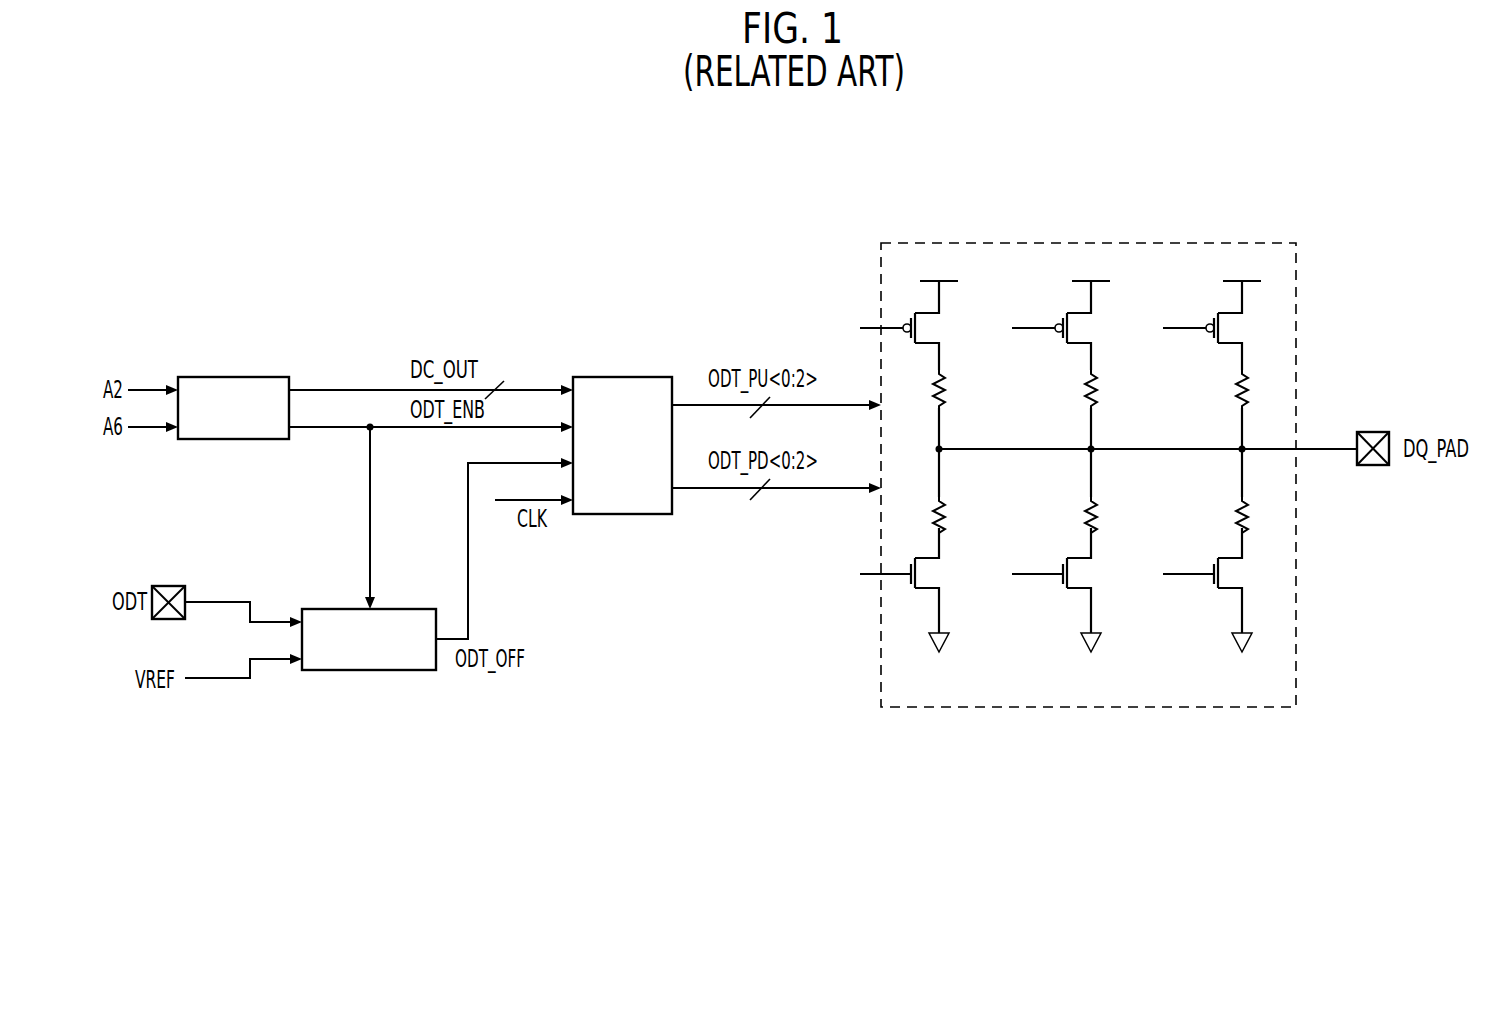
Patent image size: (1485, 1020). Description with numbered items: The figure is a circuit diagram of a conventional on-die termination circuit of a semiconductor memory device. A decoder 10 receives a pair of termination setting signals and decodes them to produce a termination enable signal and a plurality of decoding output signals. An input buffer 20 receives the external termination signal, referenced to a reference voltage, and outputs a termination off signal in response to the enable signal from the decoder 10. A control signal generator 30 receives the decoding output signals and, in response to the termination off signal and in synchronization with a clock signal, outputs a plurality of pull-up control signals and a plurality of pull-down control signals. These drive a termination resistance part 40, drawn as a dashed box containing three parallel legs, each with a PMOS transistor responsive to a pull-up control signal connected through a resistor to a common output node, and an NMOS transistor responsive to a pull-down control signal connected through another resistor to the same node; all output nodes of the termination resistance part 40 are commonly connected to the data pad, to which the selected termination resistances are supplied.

The decoder 10 is at (248, 377).
The input buffer 20 is at (383, 609).
The control signal generator 30 is at (607, 377).
The termination resistance part 40 is at (1238, 243).